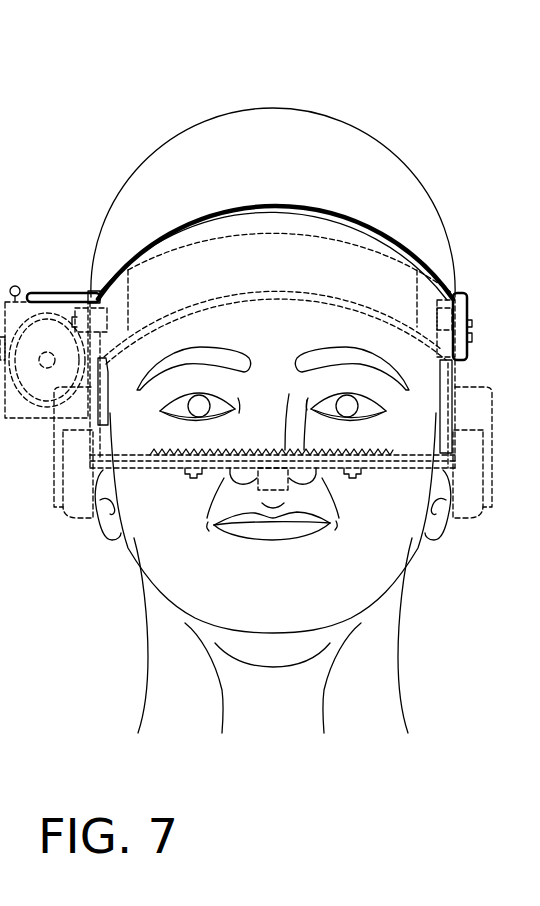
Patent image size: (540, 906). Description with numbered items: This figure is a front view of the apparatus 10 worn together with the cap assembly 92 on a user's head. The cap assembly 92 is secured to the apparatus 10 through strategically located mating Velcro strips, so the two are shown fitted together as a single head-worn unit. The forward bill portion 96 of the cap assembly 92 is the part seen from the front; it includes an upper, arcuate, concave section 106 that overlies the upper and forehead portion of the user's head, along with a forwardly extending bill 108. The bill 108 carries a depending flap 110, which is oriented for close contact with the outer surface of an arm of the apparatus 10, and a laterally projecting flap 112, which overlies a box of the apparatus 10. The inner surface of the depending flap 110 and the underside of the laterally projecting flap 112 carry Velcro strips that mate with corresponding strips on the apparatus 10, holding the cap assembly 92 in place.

The apparatus 10 is at (53, 310).
The cap assembly 92 is at (265, 281).
The forward bill portion 96 is at (390, 182).
The upper arcuate concave section 106 is at (278, 163).
The bill 108 is at (403, 248).
The depending flap 110 is at (467, 313).
The laterally projecting flap 112 is at (63, 296).